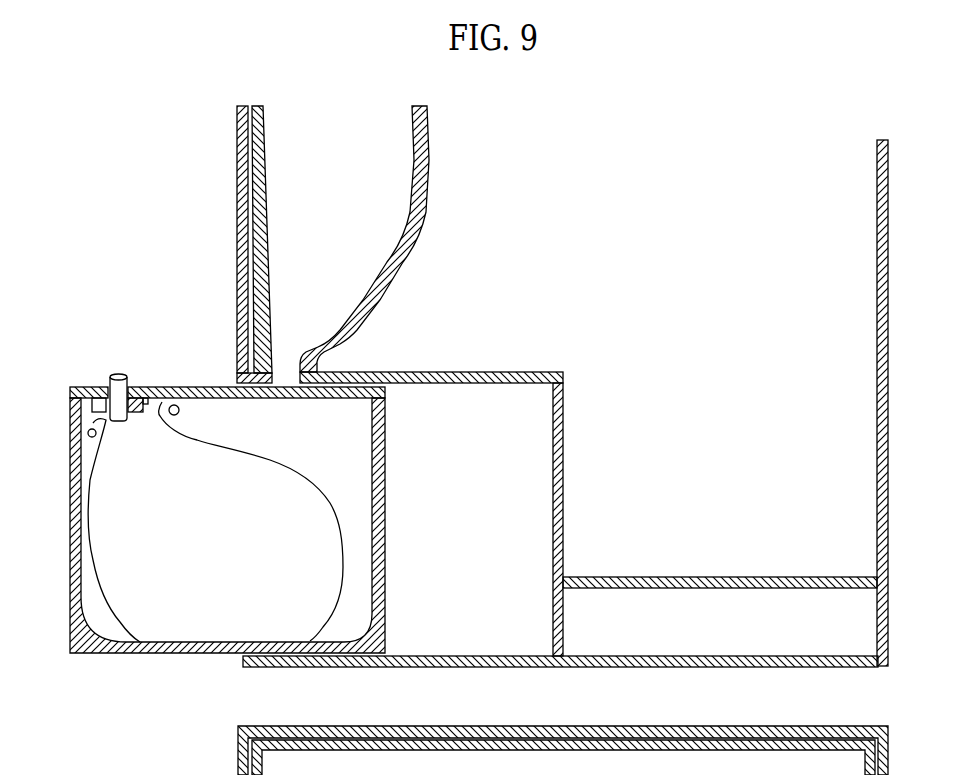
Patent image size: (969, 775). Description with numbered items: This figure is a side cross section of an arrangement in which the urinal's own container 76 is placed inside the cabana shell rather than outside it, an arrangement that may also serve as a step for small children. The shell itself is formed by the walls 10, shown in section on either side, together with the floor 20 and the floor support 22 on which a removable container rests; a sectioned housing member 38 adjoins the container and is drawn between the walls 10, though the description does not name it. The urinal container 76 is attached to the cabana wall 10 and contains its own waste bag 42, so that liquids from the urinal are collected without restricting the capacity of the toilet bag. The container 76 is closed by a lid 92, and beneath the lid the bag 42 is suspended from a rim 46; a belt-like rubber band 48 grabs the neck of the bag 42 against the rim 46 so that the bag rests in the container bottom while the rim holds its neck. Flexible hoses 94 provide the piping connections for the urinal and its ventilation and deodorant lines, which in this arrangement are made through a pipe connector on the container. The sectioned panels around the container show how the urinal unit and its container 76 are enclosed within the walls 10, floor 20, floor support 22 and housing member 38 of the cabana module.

The walls 10 is at (236, 182).
The floor 20 is at (682, 577).
The floor support 22 is at (677, 655).
The duct housing 38 is at (512, 371).
The waste bag 42 is at (340, 567).
The rim 46 is at (142, 402).
The rubber band 48 is at (190, 417).
The urinal container 76 is at (142, 660).
The lid 92 is at (205, 386).
The flexible hoses 94 is at (113, 372).